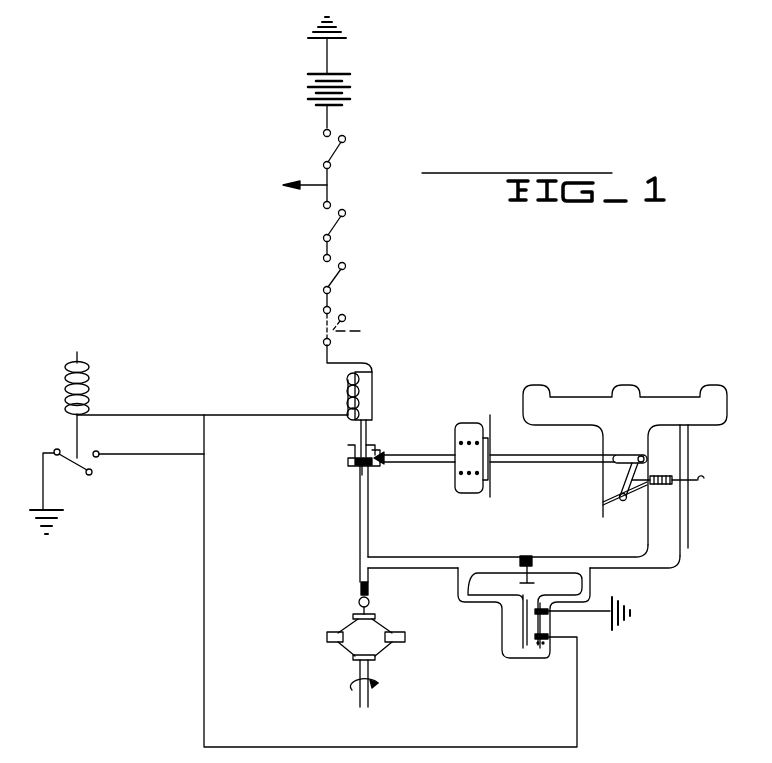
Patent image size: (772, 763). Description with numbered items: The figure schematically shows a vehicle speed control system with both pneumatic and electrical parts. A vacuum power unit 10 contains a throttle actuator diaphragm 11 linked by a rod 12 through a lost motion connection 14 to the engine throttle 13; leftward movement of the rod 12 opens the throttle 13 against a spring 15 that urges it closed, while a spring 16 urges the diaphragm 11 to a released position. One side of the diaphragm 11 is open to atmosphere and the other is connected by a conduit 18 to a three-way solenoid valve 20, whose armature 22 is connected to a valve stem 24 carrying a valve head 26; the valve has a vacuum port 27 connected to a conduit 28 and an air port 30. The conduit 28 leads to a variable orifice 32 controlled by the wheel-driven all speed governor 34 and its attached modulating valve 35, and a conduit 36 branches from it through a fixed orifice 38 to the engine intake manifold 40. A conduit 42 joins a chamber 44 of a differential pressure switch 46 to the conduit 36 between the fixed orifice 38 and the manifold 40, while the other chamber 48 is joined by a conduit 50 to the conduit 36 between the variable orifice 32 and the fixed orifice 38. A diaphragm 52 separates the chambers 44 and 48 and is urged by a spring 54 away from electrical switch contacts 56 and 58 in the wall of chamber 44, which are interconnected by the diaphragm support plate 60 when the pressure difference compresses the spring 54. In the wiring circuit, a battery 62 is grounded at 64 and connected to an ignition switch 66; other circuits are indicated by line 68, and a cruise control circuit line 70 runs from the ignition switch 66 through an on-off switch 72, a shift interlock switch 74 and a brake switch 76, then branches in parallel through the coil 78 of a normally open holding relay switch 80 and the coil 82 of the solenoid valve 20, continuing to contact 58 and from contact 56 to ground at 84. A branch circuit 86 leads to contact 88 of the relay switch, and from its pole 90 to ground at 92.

The vacuum power unit 10 is at (474, 418).
The throttle actuator diaphragm 11 is at (491, 444).
The rod 12 is at (526, 463).
The engine throttle 13 is at (603, 505).
The lost motion connection 14 is at (640, 452).
The spring 15 is at (660, 485).
The spring 16 is at (463, 493).
The conduit 18 is at (405, 463).
The three-way solenoid valve 20 is at (338, 463).
The armature 22 is at (372, 385).
The valve stem 24 is at (368, 428).
The valve head 26 is at (384, 456).
The vacuum port 27 is at (364, 470).
The conduit 28 is at (360, 530).
The air port 30 is at (368, 445).
The variable orifice 32 is at (358, 600).
The wheel-driven all speed governor 34 is at (382, 650).
The modulating valve 35 is at (372, 614).
The conduit 36 is at (420, 557).
The fixed orifice 38 is at (530, 556).
The engine intake manifold 40 is at (700, 425).
The conduit 42 is at (593, 578).
The chamber 44 is at (545, 652).
The differential pressure switch 46 is at (518, 665).
The chamber 48 is at (502, 645).
The conduit 50 is at (482, 597).
The diaphragm 52 is at (522, 586).
The spring 54 is at (538, 580).
The electrical switch contact 56 is at (552, 612).
The electrical switch contact 58 is at (550, 638).
The diaphragm support plate 60 is at (523, 620).
The battery 62 is at (355, 90).
The ground 64 is at (345, 40).
The ignition switch 66 is at (335, 140).
The line 68 is at (300, 182).
The cruise control circuit line 70 is at (327, 195).
The on-off switch 72 is at (333, 228).
The shift interlock switch 74 is at (333, 278).
The brake switch 76 is at (356, 326).
The coil 78 is at (90, 395).
The holding relay switch 80 is at (90, 445).
The coil 82 is at (350, 390).
The ground 84 is at (633, 612).
The branch circuit 86 is at (125, 455).
The contact 88 is at (100, 460).
The pole 90 is at (72, 463).
The ground 92 is at (60, 525).